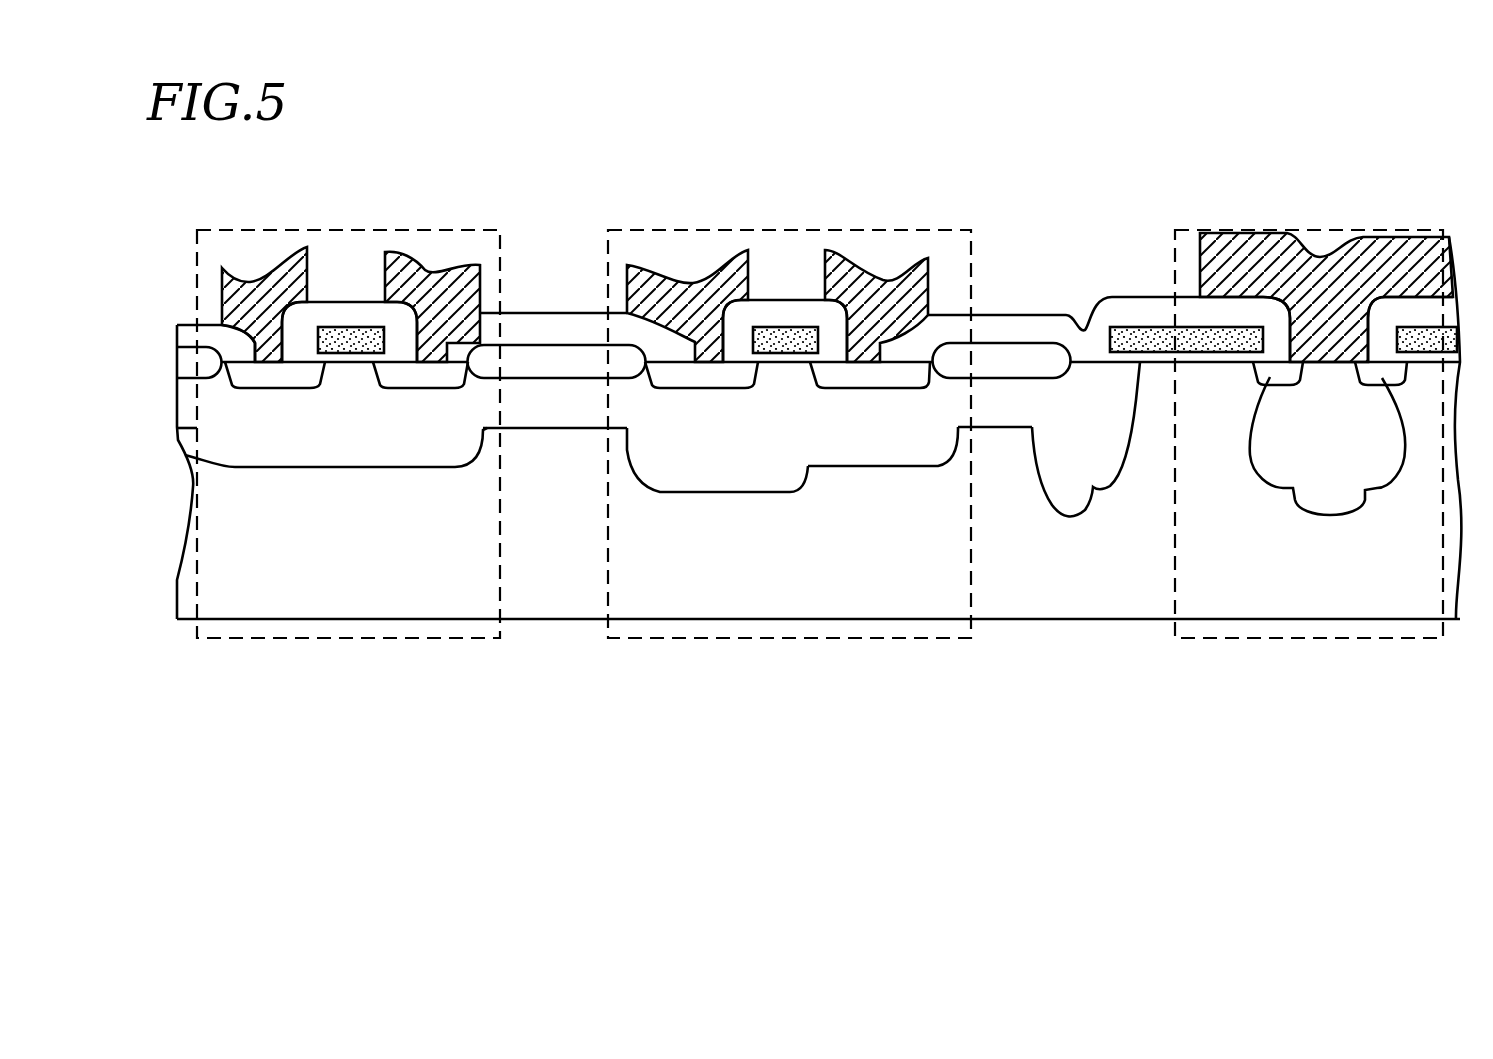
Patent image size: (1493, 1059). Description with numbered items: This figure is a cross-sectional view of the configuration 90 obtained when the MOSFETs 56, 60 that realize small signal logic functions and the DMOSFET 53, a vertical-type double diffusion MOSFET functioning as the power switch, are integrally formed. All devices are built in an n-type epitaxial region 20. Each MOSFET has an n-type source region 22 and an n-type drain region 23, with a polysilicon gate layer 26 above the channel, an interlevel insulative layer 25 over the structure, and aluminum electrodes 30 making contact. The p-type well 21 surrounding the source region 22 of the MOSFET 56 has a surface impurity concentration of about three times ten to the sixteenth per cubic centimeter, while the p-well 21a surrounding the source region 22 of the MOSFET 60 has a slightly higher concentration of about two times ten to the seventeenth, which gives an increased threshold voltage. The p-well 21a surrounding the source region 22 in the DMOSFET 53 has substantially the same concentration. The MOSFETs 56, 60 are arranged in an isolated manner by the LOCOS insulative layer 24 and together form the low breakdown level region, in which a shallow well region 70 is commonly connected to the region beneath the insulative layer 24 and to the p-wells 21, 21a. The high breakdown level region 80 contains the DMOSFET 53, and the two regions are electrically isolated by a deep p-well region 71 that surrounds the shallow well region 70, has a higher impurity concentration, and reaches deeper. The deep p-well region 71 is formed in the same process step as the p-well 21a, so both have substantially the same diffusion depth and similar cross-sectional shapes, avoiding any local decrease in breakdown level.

The n-type epitaxial region 20 is at (819, 478).
The p-type well 21 is at (669, 568).
The p-well 21a is at (1016, 546).
The n-type source region 22 is at (780, 436).
The n-type drain region 23 is at (577, 433).
The insulative layer 24 is at (600, 308).
The interlevel insulative layer 25 is at (804, 257).
The polysilicon gate layer 26 is at (887, 417).
The aluminum electrodes 30 is at (837, 257).
The DMOSFET 53 is at (1323, 463).
The MOSFET 56 is at (348, 470).
The MOSFET 60 is at (793, 464).
The shallow well region 70 is at (762, 554).
The deep p-well region 71 is at (1086, 533).
The high breakdown level region 80 is at (1265, 558).
The configuration 90 is at (183, 770).